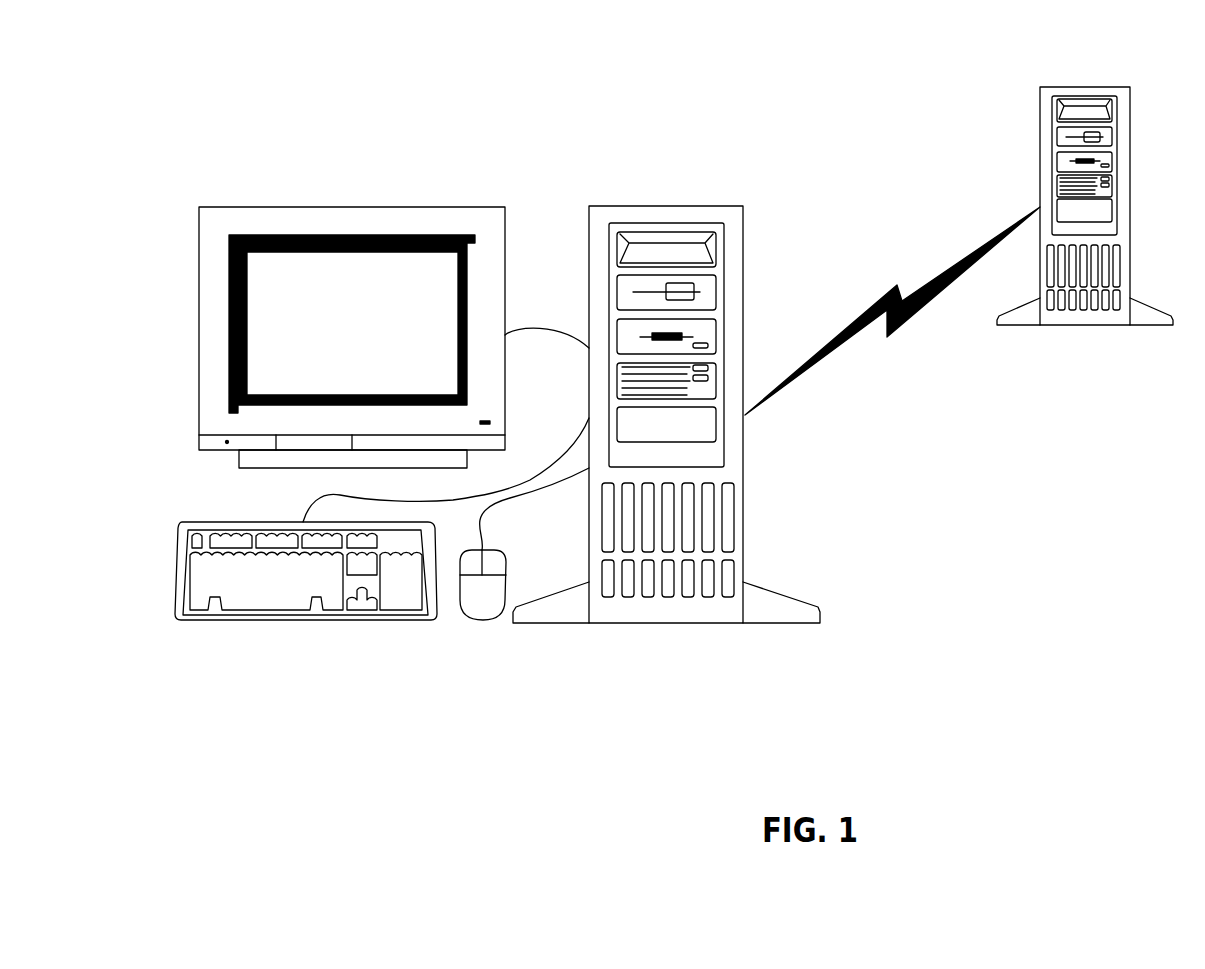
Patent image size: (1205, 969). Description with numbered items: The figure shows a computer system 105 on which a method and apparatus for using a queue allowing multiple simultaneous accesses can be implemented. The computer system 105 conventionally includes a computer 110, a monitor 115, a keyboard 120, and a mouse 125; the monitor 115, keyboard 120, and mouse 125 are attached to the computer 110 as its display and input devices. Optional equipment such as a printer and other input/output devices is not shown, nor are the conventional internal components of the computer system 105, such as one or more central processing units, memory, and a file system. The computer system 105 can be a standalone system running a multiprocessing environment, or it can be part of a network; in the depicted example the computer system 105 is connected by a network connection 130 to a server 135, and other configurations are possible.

The computer system 105 is at (206, 97).
The computer 110 is at (636, 206).
The monitor 115 is at (246, 207).
The keyboard 120 is at (218, 621).
The mouse 125 is at (483, 622).
The network connection 130 is at (878, 296).
The server 135 is at (1040, 87).